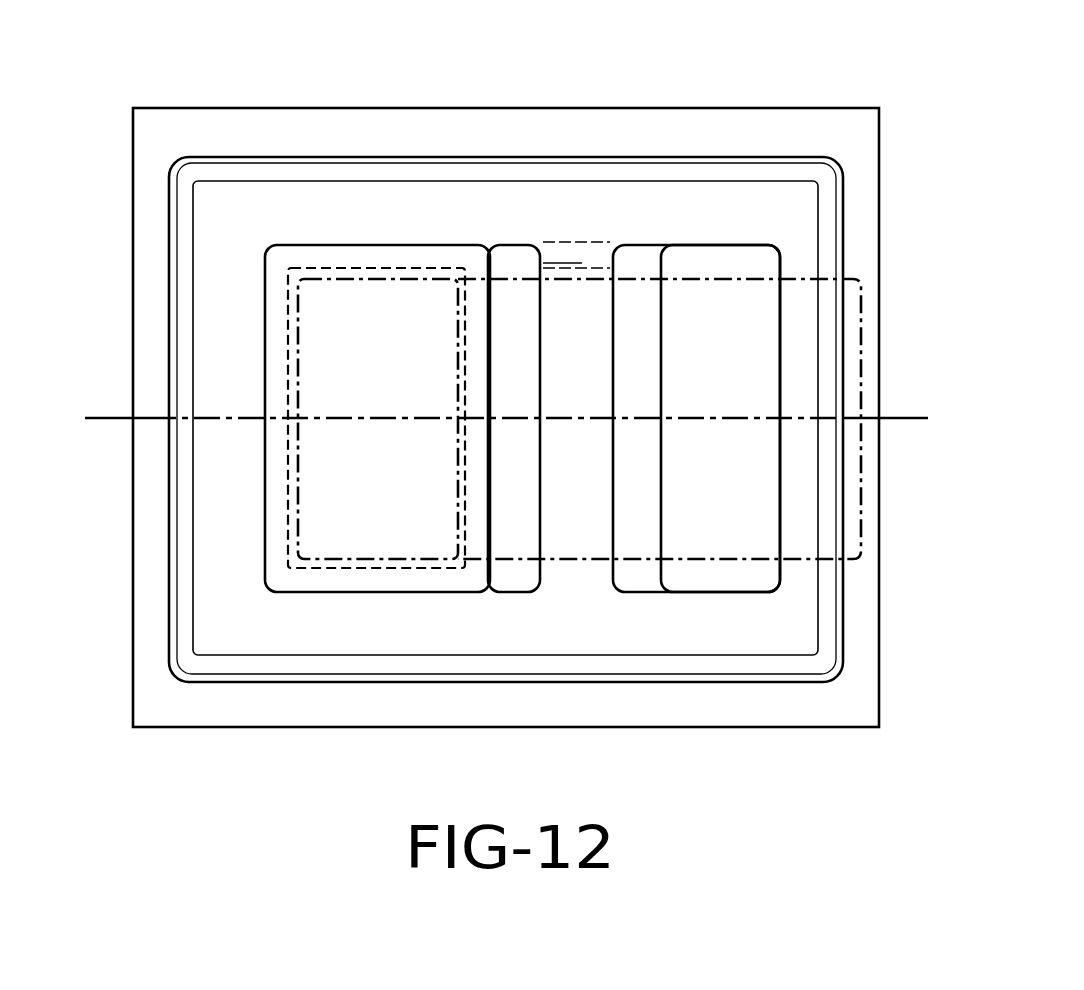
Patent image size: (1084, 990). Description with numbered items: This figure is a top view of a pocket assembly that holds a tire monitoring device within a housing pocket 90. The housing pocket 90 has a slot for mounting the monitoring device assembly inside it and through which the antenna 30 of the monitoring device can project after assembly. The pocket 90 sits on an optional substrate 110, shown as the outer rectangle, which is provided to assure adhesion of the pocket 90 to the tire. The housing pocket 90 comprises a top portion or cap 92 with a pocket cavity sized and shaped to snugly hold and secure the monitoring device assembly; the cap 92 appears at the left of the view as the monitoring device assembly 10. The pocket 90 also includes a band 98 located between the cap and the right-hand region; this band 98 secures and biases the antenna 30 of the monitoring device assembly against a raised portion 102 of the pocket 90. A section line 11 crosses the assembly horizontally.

The first electronic module 10 is at (366, 558).
The section line 11- 11 is at (85, 418).
The antenna 30 is at (745, 560).
The housing pocket 90 is at (316, 148).
The cap 92 is at (402, 386).
The band 98 is at (568, 356).
The raised portion 102 is at (748, 386).
The substrate 110 is at (708, 140).